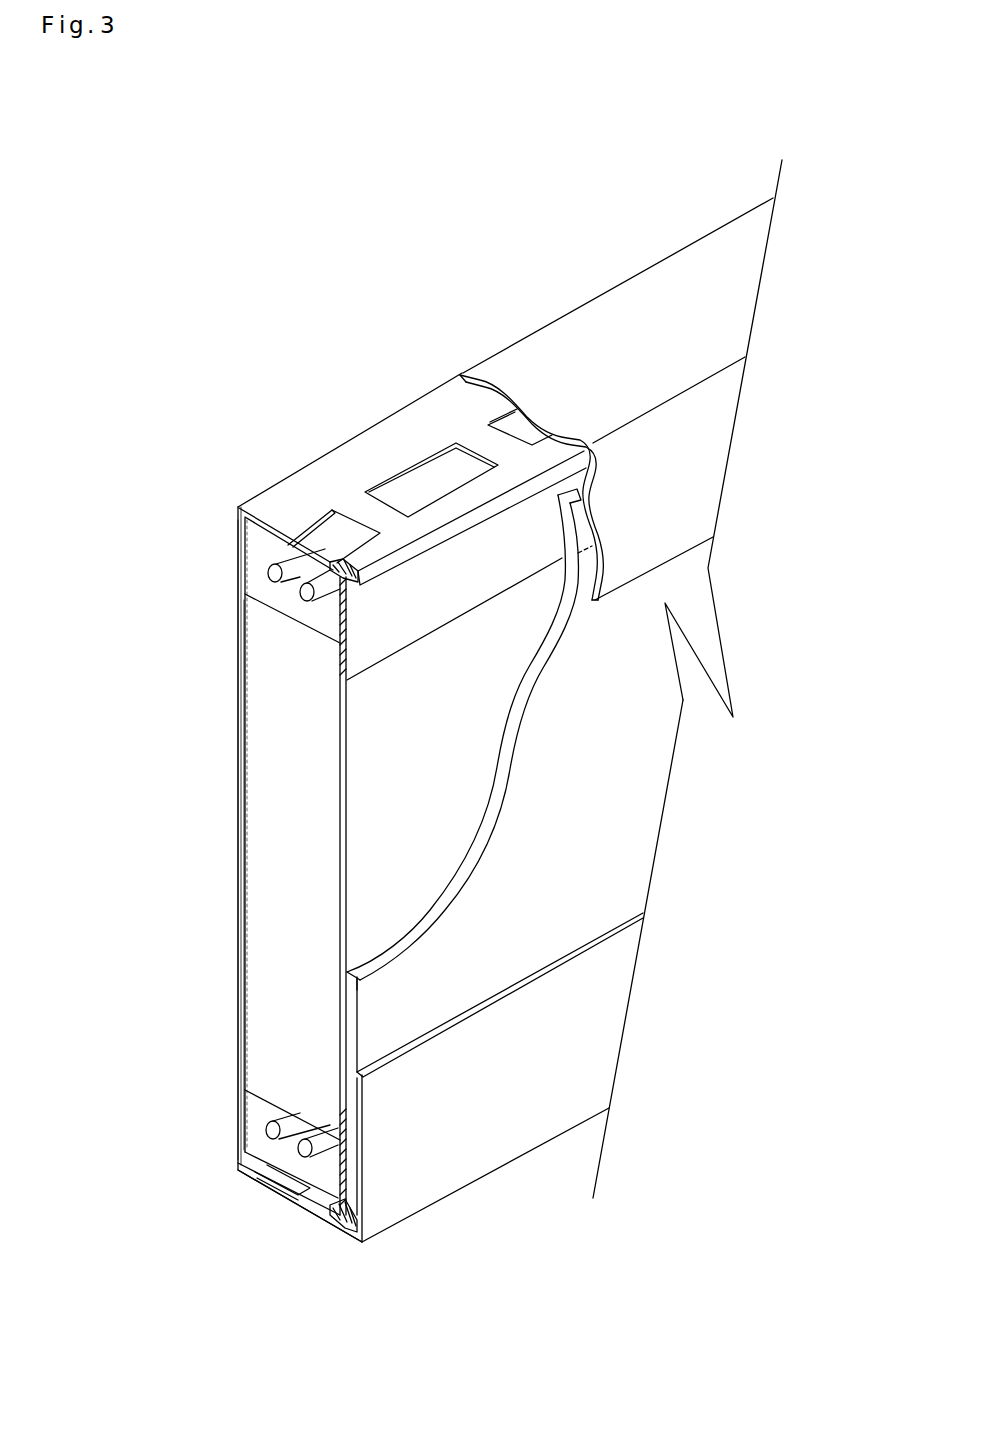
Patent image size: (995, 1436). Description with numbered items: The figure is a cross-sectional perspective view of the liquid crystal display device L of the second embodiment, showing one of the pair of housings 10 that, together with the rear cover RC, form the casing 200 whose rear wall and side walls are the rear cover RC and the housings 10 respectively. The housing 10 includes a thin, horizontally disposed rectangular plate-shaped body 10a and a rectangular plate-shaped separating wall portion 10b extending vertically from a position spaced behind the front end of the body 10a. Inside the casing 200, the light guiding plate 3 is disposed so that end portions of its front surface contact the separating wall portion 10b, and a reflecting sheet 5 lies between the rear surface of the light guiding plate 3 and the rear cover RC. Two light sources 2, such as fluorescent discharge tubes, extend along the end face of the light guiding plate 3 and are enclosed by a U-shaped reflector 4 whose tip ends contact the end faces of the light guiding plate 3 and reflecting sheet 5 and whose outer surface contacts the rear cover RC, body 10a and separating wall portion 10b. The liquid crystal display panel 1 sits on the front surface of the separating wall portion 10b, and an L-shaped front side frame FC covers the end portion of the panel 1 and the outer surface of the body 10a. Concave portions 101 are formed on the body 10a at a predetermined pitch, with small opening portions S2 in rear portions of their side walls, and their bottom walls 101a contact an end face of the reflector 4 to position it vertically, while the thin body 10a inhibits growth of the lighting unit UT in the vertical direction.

The liquid crystal display panel 1 is at (595, 835).
The light source 2 is at (256, 586).
The light guiding plate 3 is at (283, 890).
The reflector 4 is at (245, 563).
The reflecting sheet 5 is at (242, 830).
The housing 10 is at (353, 592).
The body 10a is at (285, 512).
The separating wall portion 10b is at (357, 657).
The concave portion 101 is at (438, 482).
The bottom wall 101a is at (405, 500).
The casing 200 is at (233, 803).
The opening portion S2 is at (327, 522).
The rear cover RC is at (235, 718).
The front side frame FC is at (678, 468).
The lighting unit UT is at (459, 327).
The liquid crystal display device L is at (420, 193).